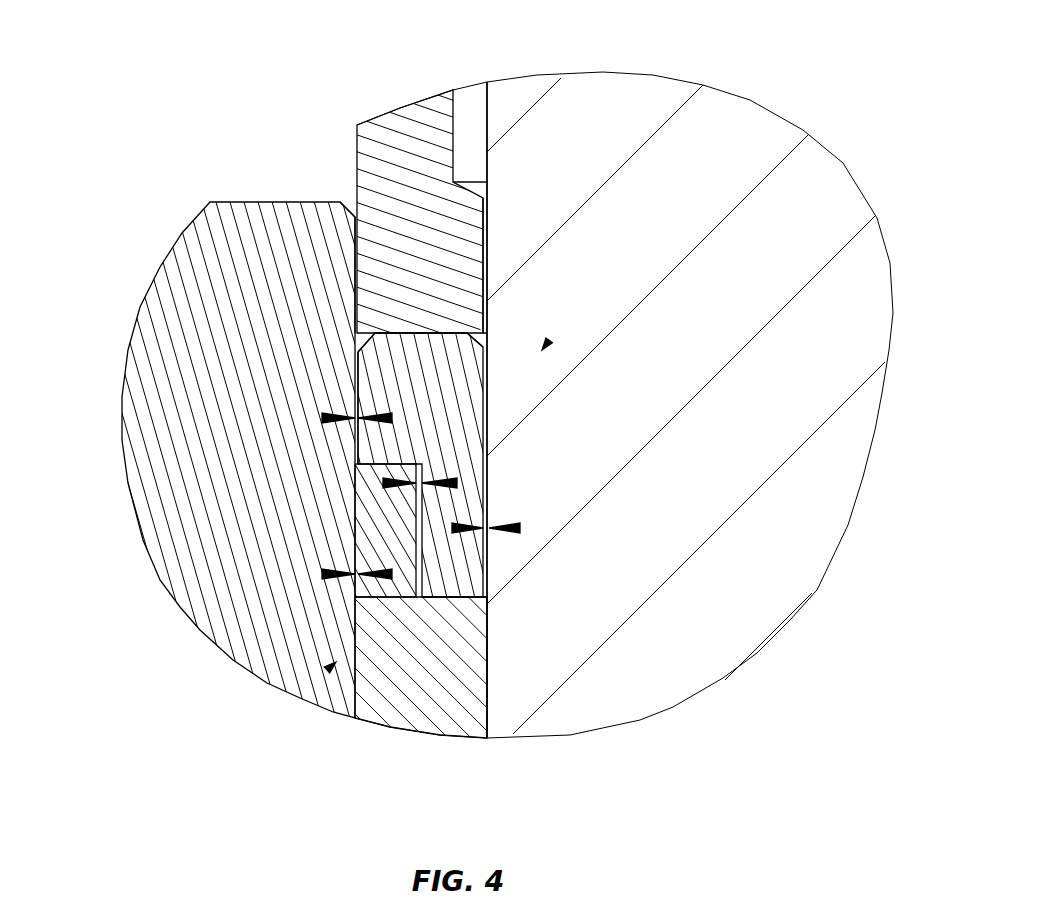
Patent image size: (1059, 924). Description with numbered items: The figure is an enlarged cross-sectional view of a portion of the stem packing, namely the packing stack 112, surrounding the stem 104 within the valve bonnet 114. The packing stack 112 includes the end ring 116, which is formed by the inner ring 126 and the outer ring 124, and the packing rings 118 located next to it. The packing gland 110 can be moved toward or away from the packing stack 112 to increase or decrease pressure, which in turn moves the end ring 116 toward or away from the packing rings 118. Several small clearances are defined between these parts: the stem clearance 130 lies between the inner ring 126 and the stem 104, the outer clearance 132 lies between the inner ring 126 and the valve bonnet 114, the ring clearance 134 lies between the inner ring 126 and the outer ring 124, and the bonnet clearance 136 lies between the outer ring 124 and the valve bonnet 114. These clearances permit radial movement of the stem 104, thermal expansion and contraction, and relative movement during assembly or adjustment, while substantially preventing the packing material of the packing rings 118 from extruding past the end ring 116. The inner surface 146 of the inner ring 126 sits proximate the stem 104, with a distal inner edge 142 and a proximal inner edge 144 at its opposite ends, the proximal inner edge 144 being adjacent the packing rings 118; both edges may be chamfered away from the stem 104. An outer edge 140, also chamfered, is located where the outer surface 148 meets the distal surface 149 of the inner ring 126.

The stem 104 is at (624, 431).
The packing gland 110 is at (419, 223).
The packing stack 112 is at (275, 697).
The valve bonnet 114 is at (271, 450).
The end ring 116 is at (640, 193).
The packing rings 118 is at (415, 666).
The outer ring 124 is at (258, 530).
The inner ring 126 is at (226, 328).
The stem clearance 130 is at (688, 574).
The outer clearance 132 is at (284, 460).
The ring clearance 134 is at (231, 507).
The bonnet clearance 136 is at (250, 615).
The outer edge 140 is at (274, 245).
The distal inner edge 142 is at (545, 173).
The proximal inner edge 144 is at (482, 697).
The inner surface 146 is at (701, 410).
The outer surface 148 is at (199, 395).
The distal surface 149 is at (420, 187).